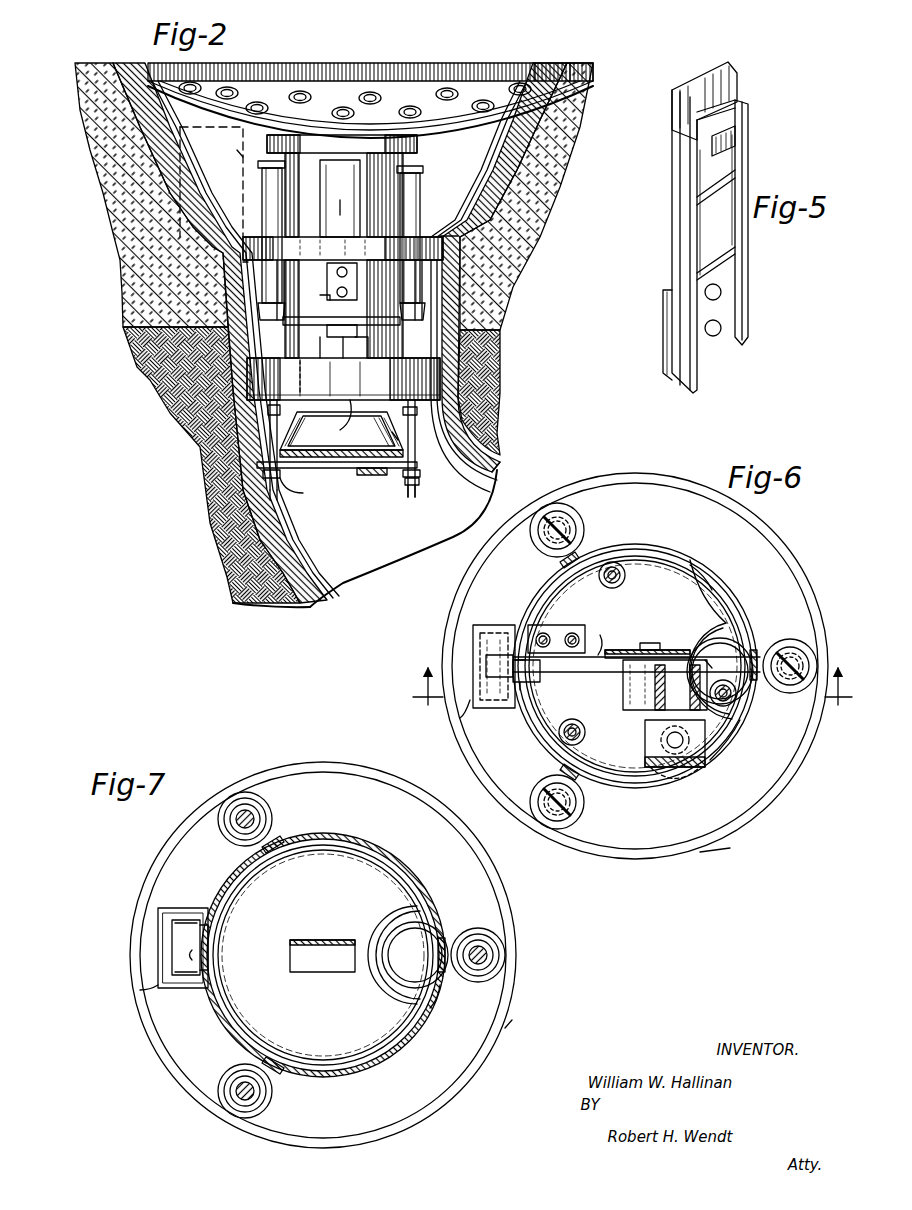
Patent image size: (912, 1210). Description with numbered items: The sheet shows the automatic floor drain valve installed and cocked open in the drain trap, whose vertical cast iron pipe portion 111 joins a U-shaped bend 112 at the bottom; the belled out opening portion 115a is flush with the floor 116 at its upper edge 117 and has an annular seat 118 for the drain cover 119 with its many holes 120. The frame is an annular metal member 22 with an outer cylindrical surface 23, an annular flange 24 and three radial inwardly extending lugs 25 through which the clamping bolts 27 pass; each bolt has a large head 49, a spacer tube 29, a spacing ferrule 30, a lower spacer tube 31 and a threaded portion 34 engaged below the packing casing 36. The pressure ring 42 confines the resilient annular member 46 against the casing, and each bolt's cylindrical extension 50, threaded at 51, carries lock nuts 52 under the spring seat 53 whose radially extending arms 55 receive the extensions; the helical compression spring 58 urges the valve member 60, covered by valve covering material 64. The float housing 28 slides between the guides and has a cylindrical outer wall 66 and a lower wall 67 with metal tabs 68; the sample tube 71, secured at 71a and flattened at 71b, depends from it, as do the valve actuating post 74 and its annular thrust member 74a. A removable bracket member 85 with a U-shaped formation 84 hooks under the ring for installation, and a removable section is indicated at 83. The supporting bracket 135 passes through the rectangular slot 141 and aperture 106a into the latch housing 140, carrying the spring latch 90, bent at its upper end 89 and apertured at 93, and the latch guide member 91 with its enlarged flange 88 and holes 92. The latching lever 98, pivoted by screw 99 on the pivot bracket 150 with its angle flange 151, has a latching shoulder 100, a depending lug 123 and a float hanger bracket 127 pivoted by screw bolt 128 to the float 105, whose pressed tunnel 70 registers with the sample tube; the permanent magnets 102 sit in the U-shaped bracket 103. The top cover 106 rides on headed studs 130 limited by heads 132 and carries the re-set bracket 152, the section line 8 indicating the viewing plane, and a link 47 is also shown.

In FIG. 6, the section line 8- 8 is at (627, 711).
In FIG. 2, the annular metal member 22 is at (310, 235).
In FIG. 6, the annular metal member 22 is at (797, 554).
In FIG. 7, the annular metal member 22 is at (343, 760).
In FIG. 2, the outer cylindrical surface 23 is at (441, 236).
In FIG. 6, the outer cylindrical surface 23 is at (725, 846).
In FIG. 7, the outer cylindrical surface 23 is at (506, 1030).
In FIG. 6, the annular flange 24 is at (778, 800).
In FIG. 7, the annular flange 24 is at (502, 877).
In FIG. 6, the radial inwardly extending lugs 25 is at (580, 513).
In FIG. 7, the radial inwardly extending lugs 25 is at (270, 792).
In FIG. 2, the clamping bolts 27 is at (282, 498).
In FIG. 7, the clamping bolts 27 is at (234, 829).
In FIG. 2, the float housing 28 is at (312, 190).
In FIG. 6, the float housing 28 is at (700, 561).
In FIG. 7, the float housing 28 is at (390, 842).
In FIG. 2, the spacer tube 29 is at (262, 185).
In FIG. 7, the spacer tube 29 is at (256, 813).
In FIG. 2, the spacing ferrule 30 is at (285, 307).
In FIG. 7, the spacing ferrule 30 is at (228, 821).
In FIG. 2, the additional spacer tube 31 is at (285, 271).
In FIG. 2, the threaded portion 34 is at (303, 418).
In FIG. 2, the packing casing 36 is at (377, 360).
In FIG. 2, the pressure ring 42 is at (350, 402).
In FIG. 2, the resilient annular member 46 is at (333, 430).
In FIG. 2, the link 47 is at (362, 358).
In FIG. 2, the bolt heads 49 is at (283, 165).
In FIG. 6, the bolt heads 49 is at (577, 528).
In FIG. 2, the cylindrical extension 50 is at (305, 428).
In FIG. 2, the threaded lower end 51 is at (416, 492).
In FIG. 2, the lock nuts 52 is at (288, 480).
In FIG. 2, the spring seat 53 is at (380, 476).
In FIG. 2, the radially extending arms 55 is at (421, 473).
In FIG. 2, the helical compression spring 58 is at (357, 470).
In FIG. 2, the valve member 60 is at (393, 434).
In FIG. 2, the valve covering material 64 is at (305, 480).
In FIG. 2, the cylindrical outer wall 66 is at (403, 160).
In FIG. 6, the cylindrical outer wall 66 is at (741, 600).
In FIG. 7, the cylindrical outer wall 66 is at (413, 863).
In FIG. 6, the lower wall 67 is at (737, 741).
In FIG. 7, the lower wall 67 is at (346, 832).
In FIG. 6, the metal tabs 68 is at (562, 562).
In FIG. 7, the metal tabs 68 is at (283, 850).
In FIG. 6, the pressed tunnel 70 is at (705, 622).
In FIG. 7, the pressed tunnel 70 is at (386, 992).
In FIG. 2, the sample tube 71 is at (298, 324).
In FIG. 6, the sample tube 71 is at (697, 655).
In FIG. 7, the sample tube 71 is at (392, 950).
In FIG. 6, the secured upper end 71a is at (722, 645).
In FIG. 7, the secured upper end 71a is at (415, 929).
In FIG. 2, the flattened lower end 71b is at (305, 378).
In FIG. 2, the valve actuating post 74 is at (343, 345).
In FIG. 2, the annular thrust member 74a is at (360, 326).
In FIG. 2, the compartment outline 83 is at (228, 127).
In FIG. 2, the U-shaped formation 84 is at (245, 268).
In FIG. 2, the removable bracket member 85 is at (237, 150).
In FIG. 5, the laterally enlarged flange 88 is at (712, 76).
In FIG. 5, the outwardly bent upper end 89 is at (738, 98).
In FIG. 5, the spring latch 90 is at (735, 188).
In FIG. 7, the spring latch 90 is at (199, 922).
In FIG. 5, the latch guide member 91 is at (749, 261).
In FIG. 6, the latch guide member 91 is at (480, 642).
In FIG. 7, the latch guide member 91 is at (186, 918).
In FIG. 5, the mounting holes 92 is at (722, 325).
In FIG. 5, the rectangular aperture 93 is at (738, 133).
In FIG. 7, the rectangular aperture 93 is at (197, 955).
In FIG. 6, the latching lever 98 is at (548, 675).
In FIG. 6, the pivot screw 99 is at (535, 690).
In FIG. 2, the latching shoulder 100 is at (502, 463).
In FIG. 6, the latching shoulder 100 is at (505, 665).
In FIG. 6, the permanent magnets 102 is at (648, 730).
In FIG. 6, the U-shaped bracket 103 is at (706, 766).
In FIG. 6, the float 105 is at (708, 590).
In FIG. 7, the float 105 is at (432, 1010).
In FIG. 2, the top cover 106 is at (412, 144).
In FIG. 7, the aperture 106a is at (208, 940).
In FIG. 2, the vertical cast iron pipe portion 111 is at (235, 300).
In FIG. 2, the U-shaped bend 112 is at (312, 607).
In FIG. 2, the belled out opening portion 115a is at (522, 120).
In FIG. 2, the floor 116 is at (583, 70).
In FIG. 2, the upper edge 117 is at (570, 72).
In FIG. 2, the annular seat 118 is at (535, 72).
In FIG. 2, the drain cover 119 is at (408, 70).
In FIG. 2, the holes 120 is at (360, 100).
In FIG. 6, the depending lug 123 is at (708, 664).
In FIG. 6, the float hanger bracket 127 is at (615, 649).
In FIG. 7, the float hanger bracket 127 is at (318, 940).
In FIG. 6, the pivot screw bolt 128 is at (653, 646).
In FIG. 6, the headed studs 130 is at (606, 587).
In FIG. 6, the stud heads 132 is at (616, 585).
In FIG. 2, the supporting bracket 135 is at (328, 296).
In FIG. 5, the supporting bracket 135 is at (665, 320).
In FIG. 6, the supporting bracket 135 is at (470, 702).
In FIG. 7, the supporting bracket 135 is at (150, 991).
In FIG. 2, the latch housing 140 is at (340, 206).
In FIG. 6, the latch housing 140 is at (492, 624).
In FIG. 7, the latch housing 140 is at (178, 908).
In FIG. 2, the rectangular slot 141 is at (332, 263).
In FIG. 6, the pivot bracket 150 is at (560, 665).
In FIG. 6, the angle flange 151 is at (565, 624).
In FIG. 6, the re-set bracket 152 is at (600, 634).